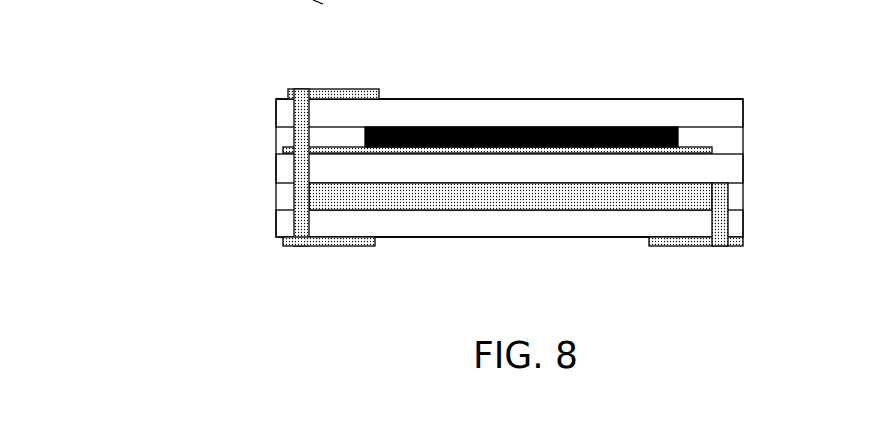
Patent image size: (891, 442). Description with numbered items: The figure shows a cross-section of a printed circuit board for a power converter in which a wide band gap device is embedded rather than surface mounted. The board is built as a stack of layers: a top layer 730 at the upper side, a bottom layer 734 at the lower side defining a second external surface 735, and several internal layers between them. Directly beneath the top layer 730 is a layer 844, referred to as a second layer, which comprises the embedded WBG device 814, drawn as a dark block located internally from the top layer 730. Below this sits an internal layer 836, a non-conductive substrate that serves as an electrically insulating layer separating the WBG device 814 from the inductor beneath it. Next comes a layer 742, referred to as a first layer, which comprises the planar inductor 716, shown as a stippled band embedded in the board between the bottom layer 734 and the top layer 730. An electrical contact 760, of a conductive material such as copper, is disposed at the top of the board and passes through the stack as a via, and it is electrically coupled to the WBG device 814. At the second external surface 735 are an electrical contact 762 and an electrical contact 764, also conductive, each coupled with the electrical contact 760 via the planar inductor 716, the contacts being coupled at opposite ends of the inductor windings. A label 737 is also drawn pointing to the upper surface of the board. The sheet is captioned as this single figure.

The planar inductor 716 is at (752, 197).
The top layer 730 is at (258, 111).
The bottom layer 734 is at (258, 223).
The second external surface 735 is at (407, 237).
The top surface 737 is at (697, 99).
The layer 742 is at (263, 184).
The electrical contact 760 is at (304, 89).
The electrical contact 762 is at (699, 246).
The electrical contact 764 is at (331, 247).
The embedded WBG device 814 is at (600, 127).
The internal layer 836 is at (258, 169).
The layer 844 is at (461, 98).